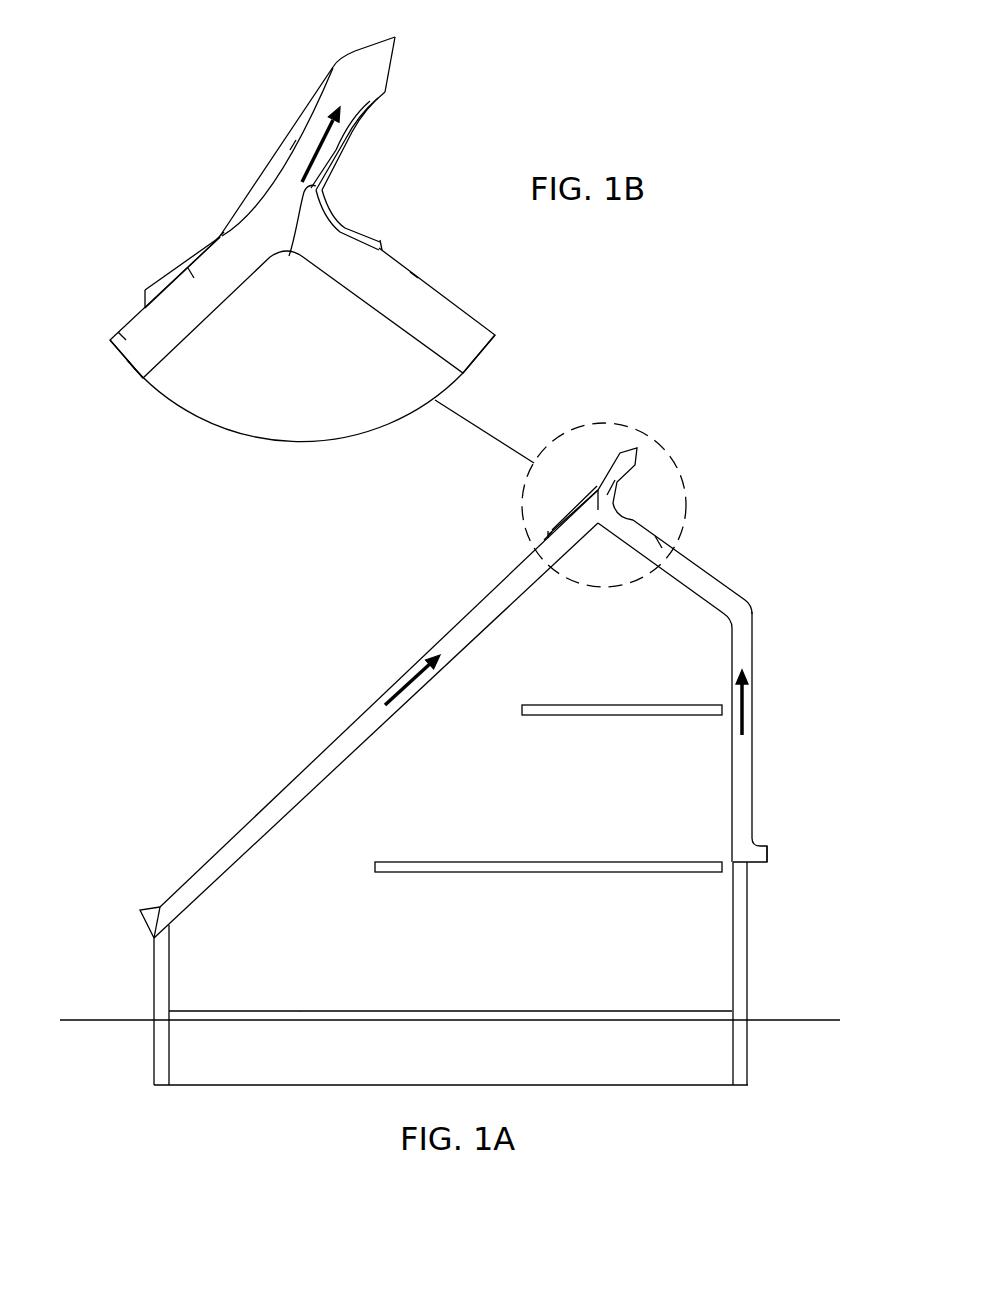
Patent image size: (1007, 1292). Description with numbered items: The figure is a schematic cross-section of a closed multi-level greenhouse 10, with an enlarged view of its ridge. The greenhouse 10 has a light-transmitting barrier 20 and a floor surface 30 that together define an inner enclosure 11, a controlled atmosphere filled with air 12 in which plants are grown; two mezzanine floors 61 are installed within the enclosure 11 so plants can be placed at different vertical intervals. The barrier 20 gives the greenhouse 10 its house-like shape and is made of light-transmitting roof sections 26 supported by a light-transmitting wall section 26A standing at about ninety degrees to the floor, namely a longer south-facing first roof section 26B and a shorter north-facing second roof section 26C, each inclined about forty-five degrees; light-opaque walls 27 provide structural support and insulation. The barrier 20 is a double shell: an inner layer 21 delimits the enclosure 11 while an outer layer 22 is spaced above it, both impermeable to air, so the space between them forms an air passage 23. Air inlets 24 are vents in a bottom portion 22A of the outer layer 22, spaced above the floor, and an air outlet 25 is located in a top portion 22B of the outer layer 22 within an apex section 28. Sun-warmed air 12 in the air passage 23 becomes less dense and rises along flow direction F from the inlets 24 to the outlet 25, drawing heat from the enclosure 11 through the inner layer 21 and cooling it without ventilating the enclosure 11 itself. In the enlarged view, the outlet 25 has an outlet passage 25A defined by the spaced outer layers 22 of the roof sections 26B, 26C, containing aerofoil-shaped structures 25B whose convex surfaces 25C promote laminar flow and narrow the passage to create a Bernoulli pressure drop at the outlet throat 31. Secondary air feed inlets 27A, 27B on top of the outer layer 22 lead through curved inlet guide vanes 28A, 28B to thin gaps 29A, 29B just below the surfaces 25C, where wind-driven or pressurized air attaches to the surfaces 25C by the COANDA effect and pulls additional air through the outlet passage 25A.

In FIG. 1A, the greenhouse 10 is at (194, 672).
In FIG. 1A, the enclosure 11 is at (473, 833).
In FIG. 1A, the air 12 is at (480, 632).
In FIG. 1B, the air 12 is at (194, 318).
In FIG. 1A, the light-transmitting barrier 20 is at (401, 676).
In FIG. 1A, the inner layer 21 is at (238, 833).
In FIG. 1B, the inner layer 21 is at (152, 357).
In FIG. 1A, the outer layer 22 is at (265, 805).
In FIG. 1B, the outer layer 22 is at (347, 57).
In FIG. 1A, the bottom portion of the outer layer 22A is at (150, 886).
In FIG. 1B, the top portion of the outer layer 22B is at (210, 185).
In FIG. 1A, the air passage 23 is at (346, 738).
In FIG. 1B, the air passage 23 is at (279, 241).
In FIG. 1A, the air inlet 24 is at (141, 914).
In FIG. 1A, the air outlet 25 is at (641, 453).
In FIG. 1B, the air outlet 25 is at (380, 66).
In FIG. 1B, the outlet passage 25A is at (320, 167).
In FIG. 1B, the aerofoil-shaped structure 25B is at (255, 182).
In FIG. 1B, the aerofoil-shaped surface 25C is at (308, 126).
In FIG. 1A, the roof section 26 is at (615, 527).
In FIG. 1A, the wall section 26A is at (765, 634).
In FIG. 1A, the first roof section 26B is at (518, 562).
In FIG. 1B, the first roof section 26B is at (117, 330).
In FIG. 1A, the second roof section 26C is at (660, 535).
In FIG. 1B, the second roof section 26C is at (418, 268).
In FIG. 1A, the light-opaque wall 27 is at (160, 997).
In FIG. 1B, the air feed inlet 27A is at (142, 298).
In FIG. 1B, the air feed inlet 27B is at (395, 236).
In FIG. 1A, the apex section 28 is at (595, 500).
In FIG. 1B, the curved surface 28A is at (191, 276).
In FIG. 1B, the curved surface 28B is at (348, 236).
In FIG. 1B, the thin gap 29A is at (222, 234).
In FIG. 1B, the thin gap 29B is at (292, 258).
In FIG. 1A, the floor surface 30 is at (612, 484).
In FIG. 1B, the floor surface 30 is at (296, 140).
In FIG. 1A, the outlet throat 31 is at (705, 1012).
In FIG. 1A, the mezzanine floor 61 is at (622, 716).
In FIG. 1A, the flow direction F is at (775, 707).
In FIG. 1B, the flow direction F is at (336, 132).